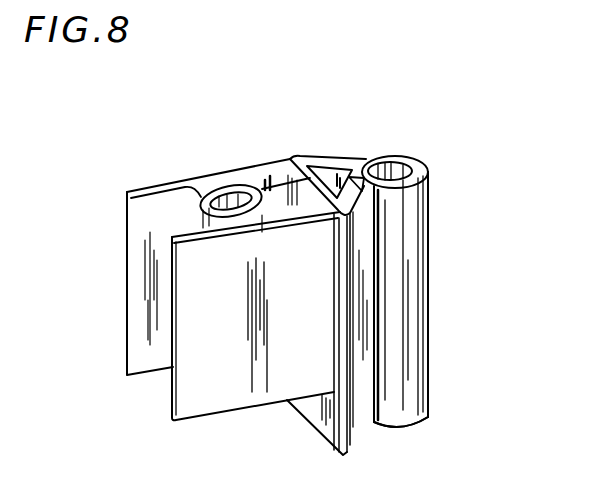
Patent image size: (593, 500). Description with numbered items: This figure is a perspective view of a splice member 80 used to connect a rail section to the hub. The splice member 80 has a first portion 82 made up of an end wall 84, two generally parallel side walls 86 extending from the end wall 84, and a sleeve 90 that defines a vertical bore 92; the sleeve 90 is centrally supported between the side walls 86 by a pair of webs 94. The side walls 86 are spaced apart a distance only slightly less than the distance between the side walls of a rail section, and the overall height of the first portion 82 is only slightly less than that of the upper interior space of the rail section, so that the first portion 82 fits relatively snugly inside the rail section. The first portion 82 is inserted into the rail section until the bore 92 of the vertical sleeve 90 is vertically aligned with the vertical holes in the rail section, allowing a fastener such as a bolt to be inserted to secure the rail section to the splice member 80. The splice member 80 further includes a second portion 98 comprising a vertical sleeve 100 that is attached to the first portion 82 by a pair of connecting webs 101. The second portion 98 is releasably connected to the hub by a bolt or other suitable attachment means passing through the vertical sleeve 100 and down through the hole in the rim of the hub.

The splice member 80 is at (436, 143).
The first portion 82 is at (127, 192).
The end wall 84 is at (271, 161).
The side walls 86 is at (173, 312).
The sleeve 90 is at (200, 193).
The vertical bore 92 is at (208, 201).
The webs 94 is at (213, 184).
The second portion 98 is at (430, 240).
The vertical sleeve 100 is at (373, 157).
The connecting webs 101 is at (333, 158).